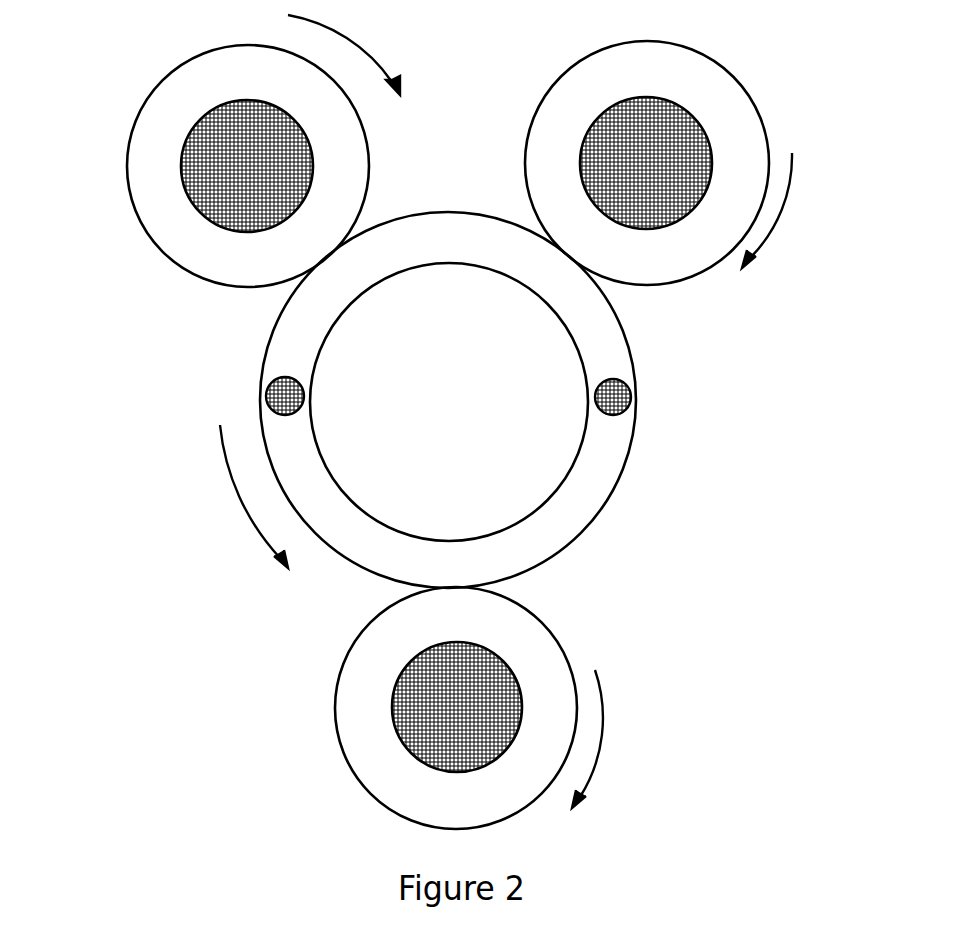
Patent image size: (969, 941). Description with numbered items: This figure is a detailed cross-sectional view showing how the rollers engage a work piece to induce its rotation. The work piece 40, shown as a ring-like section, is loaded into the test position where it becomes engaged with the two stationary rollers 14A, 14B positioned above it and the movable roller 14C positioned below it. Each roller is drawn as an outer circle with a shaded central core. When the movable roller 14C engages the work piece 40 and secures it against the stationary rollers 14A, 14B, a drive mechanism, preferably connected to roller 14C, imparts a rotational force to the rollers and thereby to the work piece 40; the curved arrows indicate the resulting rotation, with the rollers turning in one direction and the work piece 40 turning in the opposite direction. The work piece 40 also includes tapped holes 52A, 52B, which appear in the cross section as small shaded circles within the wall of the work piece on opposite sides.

The work piece 40 is at (608, 457).
The stationary roller 14A is at (168, 110).
The stationary roller 14B is at (673, 73).
The movable roller 14C is at (353, 720).
The tapped hole 52A is at (278, 393).
The tapped hole 52B is at (623, 397).